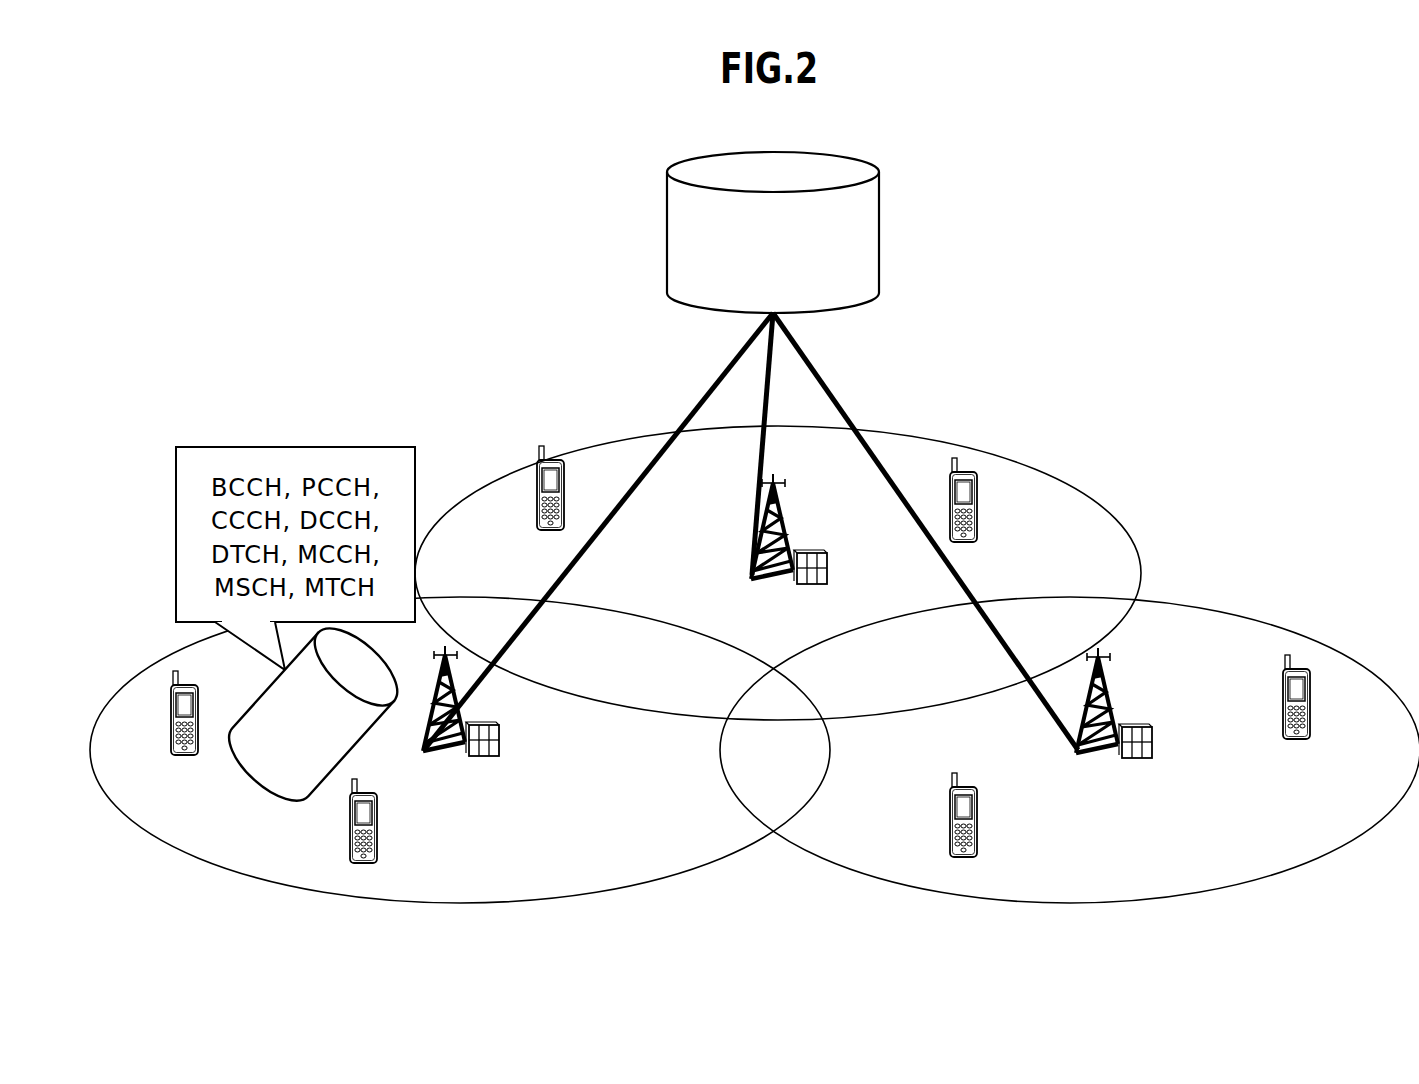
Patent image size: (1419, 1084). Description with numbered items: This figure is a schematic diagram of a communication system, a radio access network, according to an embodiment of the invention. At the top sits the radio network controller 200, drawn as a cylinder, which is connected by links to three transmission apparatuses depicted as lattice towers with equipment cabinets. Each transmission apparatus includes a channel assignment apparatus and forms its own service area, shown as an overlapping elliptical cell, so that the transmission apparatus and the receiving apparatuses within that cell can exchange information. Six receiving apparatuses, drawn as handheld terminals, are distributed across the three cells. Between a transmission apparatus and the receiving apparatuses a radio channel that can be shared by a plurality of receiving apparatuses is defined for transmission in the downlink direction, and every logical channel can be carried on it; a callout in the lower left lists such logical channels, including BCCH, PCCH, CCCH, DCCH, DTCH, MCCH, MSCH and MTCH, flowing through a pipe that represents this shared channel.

The radio network controller 200 is at (880, 290).